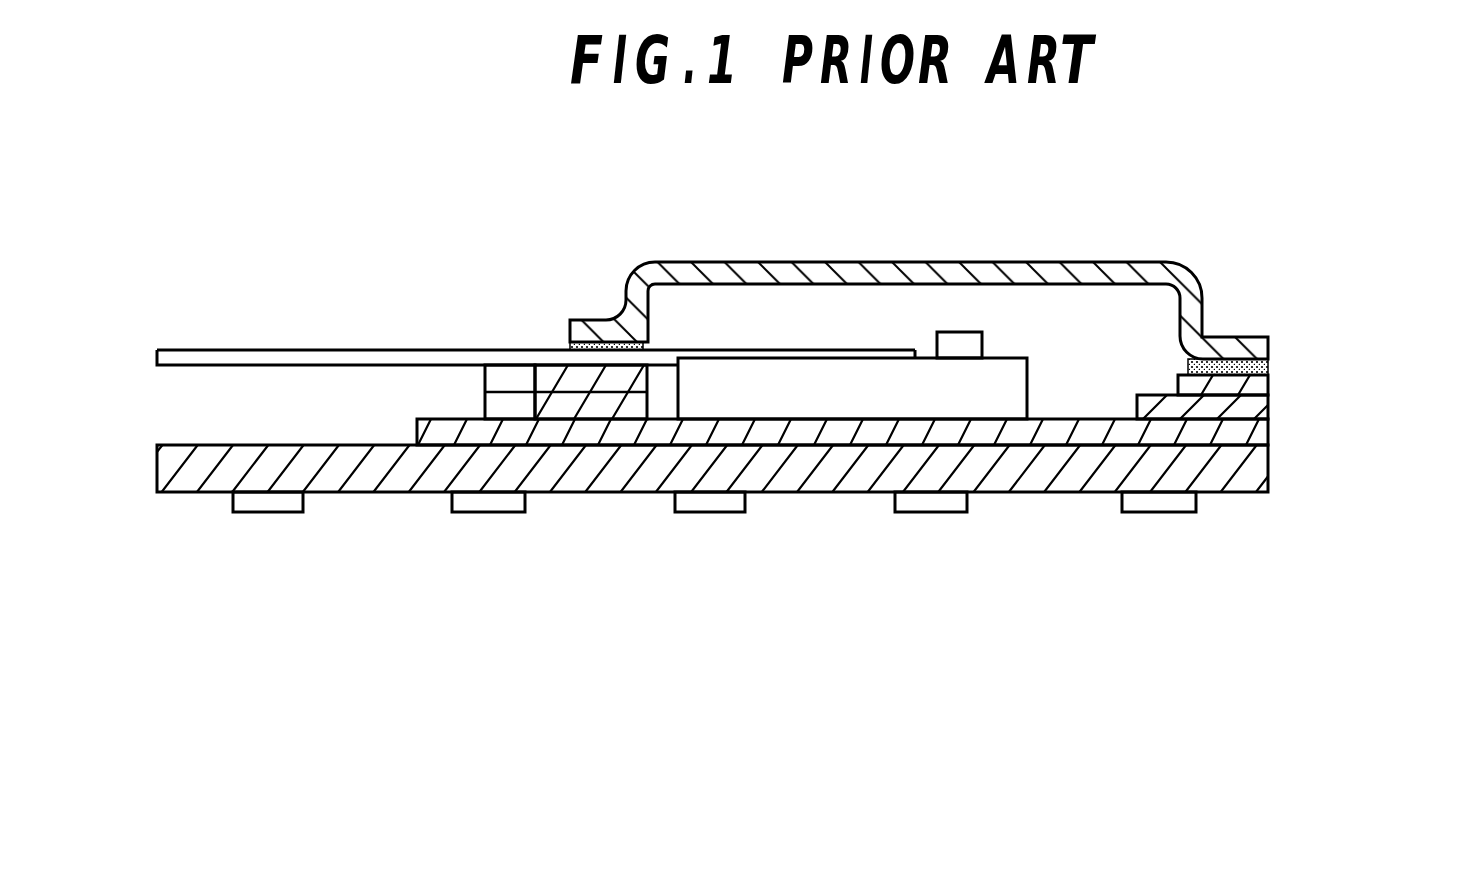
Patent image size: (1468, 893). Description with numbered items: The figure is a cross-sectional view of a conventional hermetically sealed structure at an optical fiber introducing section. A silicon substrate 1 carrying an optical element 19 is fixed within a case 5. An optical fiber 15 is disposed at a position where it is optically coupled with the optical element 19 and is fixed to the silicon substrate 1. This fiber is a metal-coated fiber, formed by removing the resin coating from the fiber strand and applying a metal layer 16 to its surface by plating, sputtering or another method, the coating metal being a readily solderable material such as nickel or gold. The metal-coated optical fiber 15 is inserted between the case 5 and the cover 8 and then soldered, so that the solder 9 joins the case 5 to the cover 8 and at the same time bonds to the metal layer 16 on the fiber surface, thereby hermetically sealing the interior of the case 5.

The silicon substrate 1 is at (833, 398).
The case 5 is at (1043, 475).
The cover 8 is at (787, 262).
The solder 9 is at (579, 320).
The optical fiber 15 is at (373, 357).
The metal layer 16 is at (233, 350).
The optical element 19 is at (975, 332).